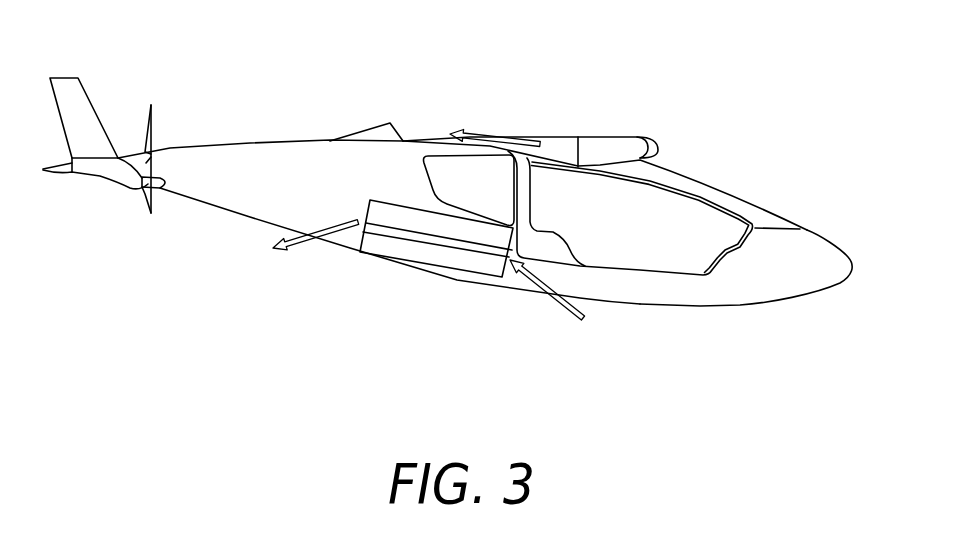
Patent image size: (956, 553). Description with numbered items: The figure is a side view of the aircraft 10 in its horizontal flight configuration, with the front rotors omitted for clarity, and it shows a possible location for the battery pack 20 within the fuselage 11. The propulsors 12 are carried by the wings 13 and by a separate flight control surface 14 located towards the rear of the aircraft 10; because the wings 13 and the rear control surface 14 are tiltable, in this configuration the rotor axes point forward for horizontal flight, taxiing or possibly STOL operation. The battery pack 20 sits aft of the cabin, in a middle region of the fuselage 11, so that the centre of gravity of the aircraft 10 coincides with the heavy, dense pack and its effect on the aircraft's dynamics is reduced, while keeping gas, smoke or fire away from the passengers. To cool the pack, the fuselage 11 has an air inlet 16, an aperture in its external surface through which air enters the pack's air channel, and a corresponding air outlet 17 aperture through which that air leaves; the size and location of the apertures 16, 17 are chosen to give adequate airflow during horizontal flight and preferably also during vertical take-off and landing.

The aircraft 10 is at (707, 39).
The fuselage 11 is at (267, 152).
The propulsors 12 is at (152, 118).
The wings 13 is at (492, 194).
The flight control surface 14 is at (80, 181).
The air inlet 16 is at (567, 318).
The air outlet 17 is at (297, 247).
The battery pack 20 is at (405, 250).